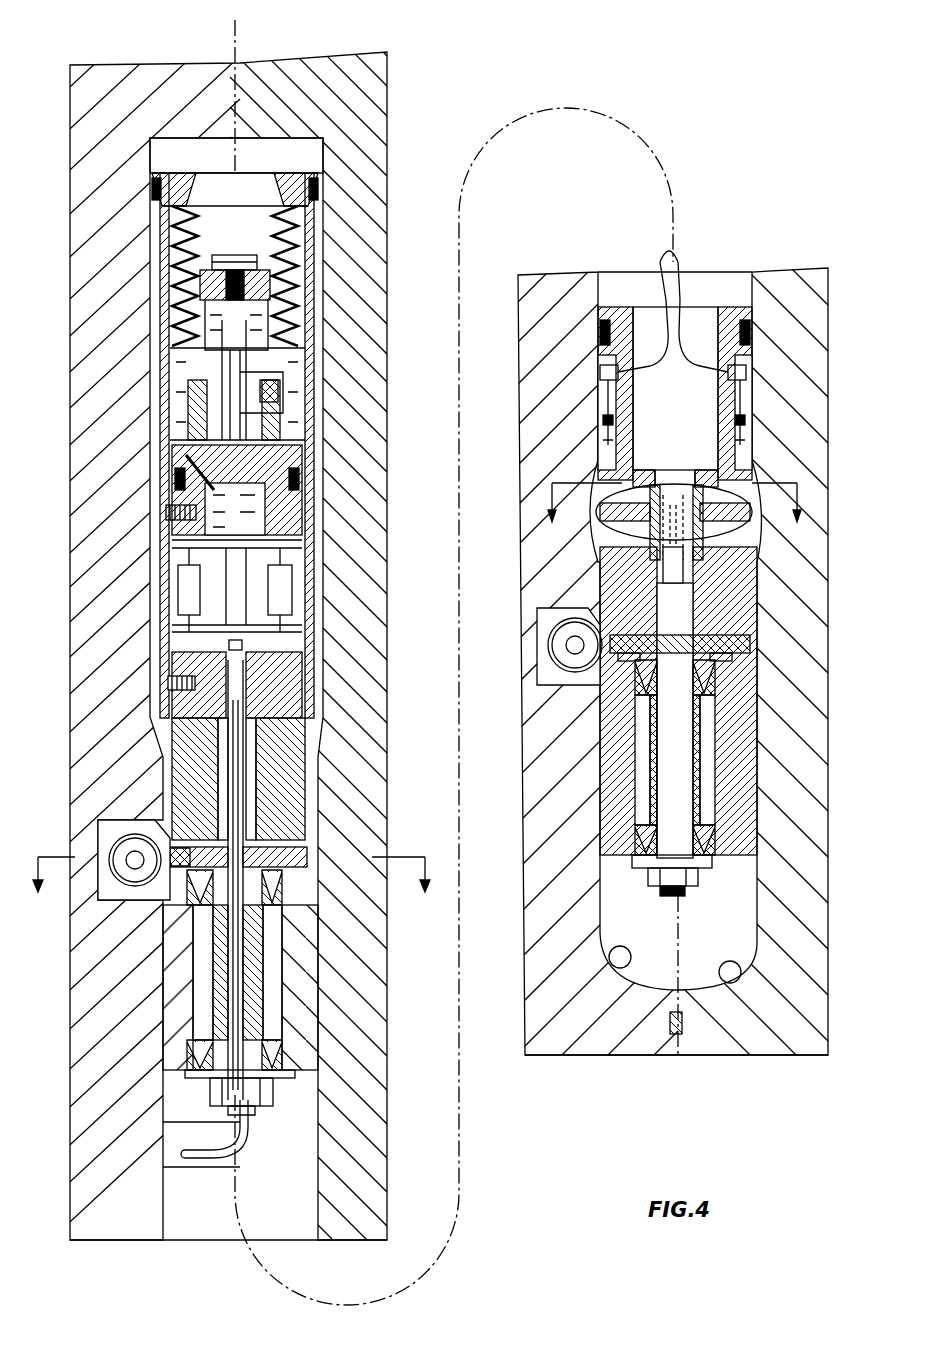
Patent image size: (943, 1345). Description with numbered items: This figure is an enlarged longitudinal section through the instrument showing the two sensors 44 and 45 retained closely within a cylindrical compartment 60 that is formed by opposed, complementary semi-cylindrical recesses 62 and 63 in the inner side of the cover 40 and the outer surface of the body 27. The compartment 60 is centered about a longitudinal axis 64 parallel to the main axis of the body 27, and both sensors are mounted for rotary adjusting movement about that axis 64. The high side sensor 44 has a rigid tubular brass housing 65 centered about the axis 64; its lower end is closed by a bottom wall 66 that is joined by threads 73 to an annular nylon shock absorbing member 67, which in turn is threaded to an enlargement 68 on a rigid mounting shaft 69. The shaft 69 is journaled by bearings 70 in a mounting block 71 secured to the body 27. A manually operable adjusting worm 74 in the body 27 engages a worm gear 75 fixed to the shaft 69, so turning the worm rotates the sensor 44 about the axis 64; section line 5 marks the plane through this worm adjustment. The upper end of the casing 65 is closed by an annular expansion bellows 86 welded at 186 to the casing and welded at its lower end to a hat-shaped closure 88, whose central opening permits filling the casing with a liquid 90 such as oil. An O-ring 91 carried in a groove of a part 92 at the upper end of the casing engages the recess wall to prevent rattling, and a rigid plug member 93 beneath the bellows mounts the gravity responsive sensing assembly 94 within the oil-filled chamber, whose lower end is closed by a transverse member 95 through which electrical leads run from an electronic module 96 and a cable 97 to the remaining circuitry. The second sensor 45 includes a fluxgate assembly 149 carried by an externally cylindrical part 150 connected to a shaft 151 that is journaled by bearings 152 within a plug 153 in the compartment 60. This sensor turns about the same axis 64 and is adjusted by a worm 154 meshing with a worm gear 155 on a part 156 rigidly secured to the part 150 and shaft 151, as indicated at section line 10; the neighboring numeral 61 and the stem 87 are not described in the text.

The section line 5- 5 is at (229, 897).
The section line 10- 10 is at (675, 503).
The body 27 is at (88, 1106).
The cover 40 is at (370, 1179).
The high side sensor 44 is at (120, 430).
The second sensor 45 is at (800, 539).
The cylindrical compartment 60 is at (294, 150).
The upper passage 61 is at (735, 280).
The semi-cylindrical recess 62 is at (733, 993).
The semi-cylindrical recess 63 is at (612, 960).
The longitudinal axis 64 is at (235, 47).
The tubular case or housing 65 is at (310, 237).
The bottom plug or wall 66 is at (293, 673).
The annular shock absorbing member 67 is at (290, 765).
The enlargement 68 is at (290, 841).
The mounting shaft 69 is at (267, 956).
The bearings 70 is at (303, 1062).
The mounting block 71 is at (120, 1014).
The threads 73 is at (260, 731).
The adjusting worm 74 is at (118, 832).
The worm gear 75 is at (126, 884).
The annular expansion bellows 86 is at (170, 264).
The stem 87 is at (182, 338).
The hat-shaped wall or closure 88 is at (172, 364).
The liquid 90 is at (327, 346).
The O-ring 91 is at (320, 187).
The part 92 is at (287, 197).
The rigid plug member 93 is at (306, 449).
The high side sensing assembly 94 is at (298, 393).
The transverse member 95 is at (262, 517).
The electronic module 96 is at (284, 588).
The cable 97 is at (247, 646).
The fluxgate assembly 149 is at (592, 530).
The externally cylindrical part 150 is at (718, 460).
The shaft 151 is at (685, 622).
The bearings 152 is at (710, 681).
The plug 153 is at (743, 780).
The worm 154 is at (562, 646).
The worm gear 155 is at (750, 647).
The part 156 is at (750, 576).
The weld 186 is at (158, 197).